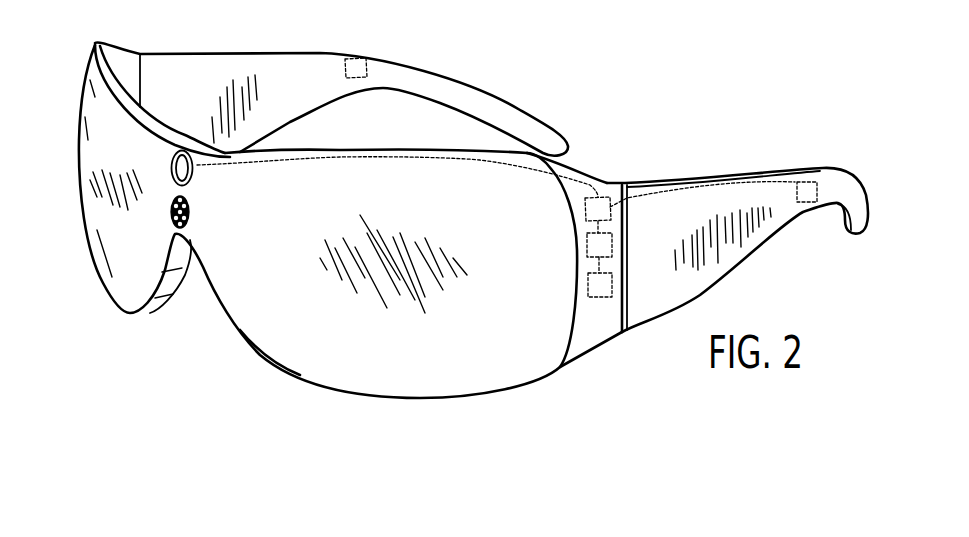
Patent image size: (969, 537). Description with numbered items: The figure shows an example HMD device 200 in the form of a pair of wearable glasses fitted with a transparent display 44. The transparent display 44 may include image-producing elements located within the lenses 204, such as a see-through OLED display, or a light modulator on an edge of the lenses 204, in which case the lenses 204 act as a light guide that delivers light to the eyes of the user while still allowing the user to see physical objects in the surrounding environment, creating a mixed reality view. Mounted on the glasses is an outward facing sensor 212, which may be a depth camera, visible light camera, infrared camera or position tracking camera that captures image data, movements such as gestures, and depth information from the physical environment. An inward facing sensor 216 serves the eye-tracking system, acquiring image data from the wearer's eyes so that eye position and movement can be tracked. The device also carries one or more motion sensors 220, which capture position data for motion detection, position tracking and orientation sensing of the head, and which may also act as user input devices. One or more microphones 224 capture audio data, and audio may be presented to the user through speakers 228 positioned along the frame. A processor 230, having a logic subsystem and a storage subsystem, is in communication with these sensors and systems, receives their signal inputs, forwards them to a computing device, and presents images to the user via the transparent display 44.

The HMD device 200 is at (112, 350).
The lenses 204 is at (122, 288).
The transparent display 44 is at (276, 328).
The outward facing sensor 212 is at (196, 166).
The inward facing sensor 216 is at (192, 210).
The motion sensors 220 is at (604, 192).
The microphones 224 is at (622, 229).
The speakers 228 is at (360, 58).
The processor 230 is at (622, 268).